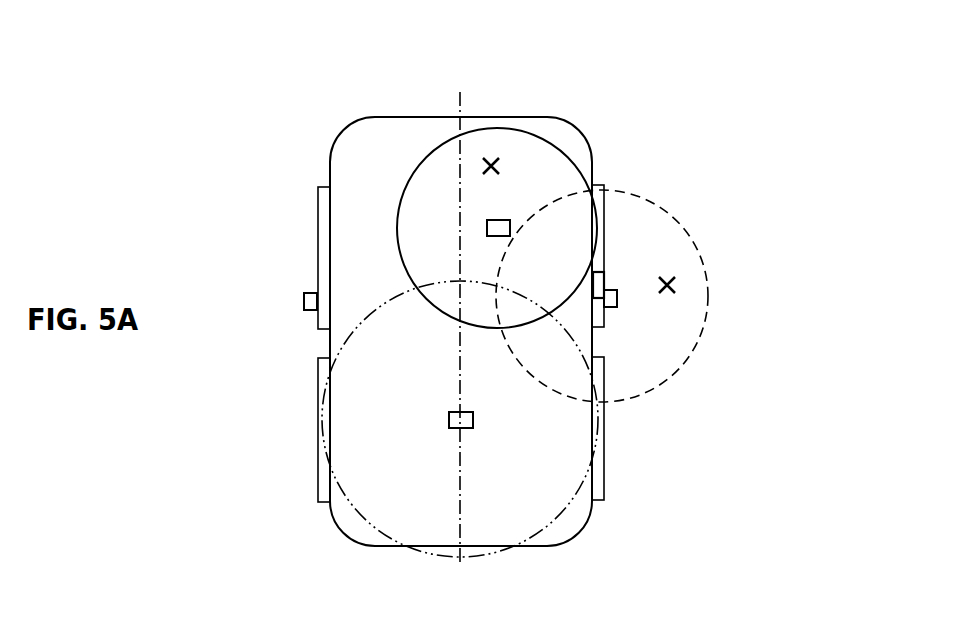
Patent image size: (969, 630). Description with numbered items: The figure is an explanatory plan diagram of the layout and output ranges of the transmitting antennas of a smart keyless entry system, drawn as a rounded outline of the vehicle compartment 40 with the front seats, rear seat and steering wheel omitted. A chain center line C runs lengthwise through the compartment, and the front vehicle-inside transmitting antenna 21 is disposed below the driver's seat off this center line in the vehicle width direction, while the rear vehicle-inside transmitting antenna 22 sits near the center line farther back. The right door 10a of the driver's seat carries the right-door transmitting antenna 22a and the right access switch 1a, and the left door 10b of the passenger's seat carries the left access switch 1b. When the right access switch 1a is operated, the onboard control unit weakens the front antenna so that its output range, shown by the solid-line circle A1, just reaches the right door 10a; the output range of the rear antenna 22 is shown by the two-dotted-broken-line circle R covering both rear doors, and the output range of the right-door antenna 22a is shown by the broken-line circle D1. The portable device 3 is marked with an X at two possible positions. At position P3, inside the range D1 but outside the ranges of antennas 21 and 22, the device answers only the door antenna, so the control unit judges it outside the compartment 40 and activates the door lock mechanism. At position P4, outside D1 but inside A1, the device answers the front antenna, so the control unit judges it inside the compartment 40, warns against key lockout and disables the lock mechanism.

The vehicle compartment 40 is at (585, 524).
The center line C is at (461, 331).
The output range of front vehicle-inside transmitting antenna A1 is at (433, 150).
The output range of rear vehicle-inside transmitting antenna R is at (372, 524).
The output range of right-door transmitting antenna D1 is at (708, 272).
The right door 10a is at (600, 186).
The left door 10b is at (318, 203).
The right access switch 1a is at (617, 300).
The left access switch 1b is at (304, 302).
The front vehicle-inside transmitting antenna 21 is at (500, 220).
The rear vehicle-inside transmitting antenna 22 is at (449, 423).
The right-door transmitting antenna 22a is at (599, 285).
The portable device 3 is at (650, 181).
The position P4 is at (493, 158).
The position P3 is at (675, 290).